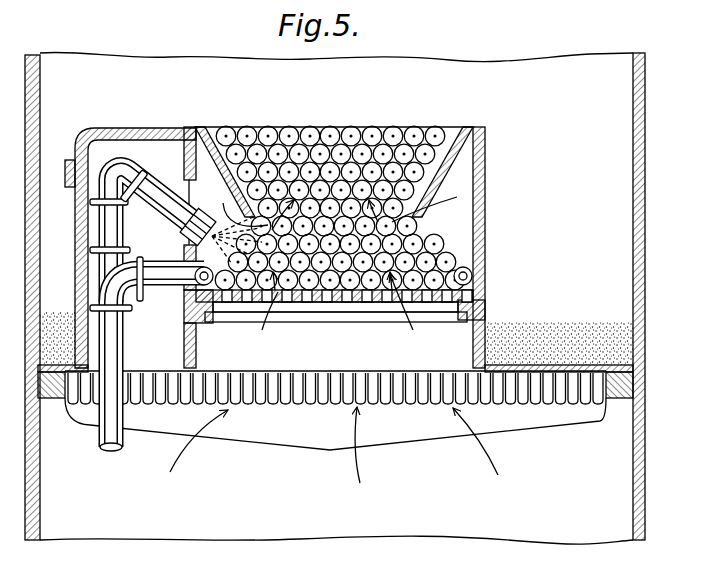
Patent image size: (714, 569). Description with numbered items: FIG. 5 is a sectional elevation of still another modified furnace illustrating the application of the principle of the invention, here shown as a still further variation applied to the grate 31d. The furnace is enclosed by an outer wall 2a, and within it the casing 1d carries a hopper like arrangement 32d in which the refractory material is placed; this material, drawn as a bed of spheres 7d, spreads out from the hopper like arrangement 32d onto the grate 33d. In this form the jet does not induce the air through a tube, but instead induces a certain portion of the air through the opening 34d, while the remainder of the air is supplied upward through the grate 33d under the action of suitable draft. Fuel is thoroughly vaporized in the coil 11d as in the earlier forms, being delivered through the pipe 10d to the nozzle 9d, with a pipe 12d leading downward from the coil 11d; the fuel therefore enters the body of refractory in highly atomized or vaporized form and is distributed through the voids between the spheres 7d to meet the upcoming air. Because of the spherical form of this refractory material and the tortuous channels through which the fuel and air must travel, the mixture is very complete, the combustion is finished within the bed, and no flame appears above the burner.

The casing 1d is at (486, 186).
The housing wall 2a is at (641, 223).
The balls 7d is at (368, 142).
The nozzle 9d is at (148, 193).
The supply pipe 10d is at (110, 230).
The coil 11d is at (178, 292).
The drain pipe 12d is at (110, 432).
The grate 31d is at (270, 434).
The hopper like arrangement 32d is at (445, 192).
The grate 33d is at (323, 303).
The opening 34d is at (196, 190).